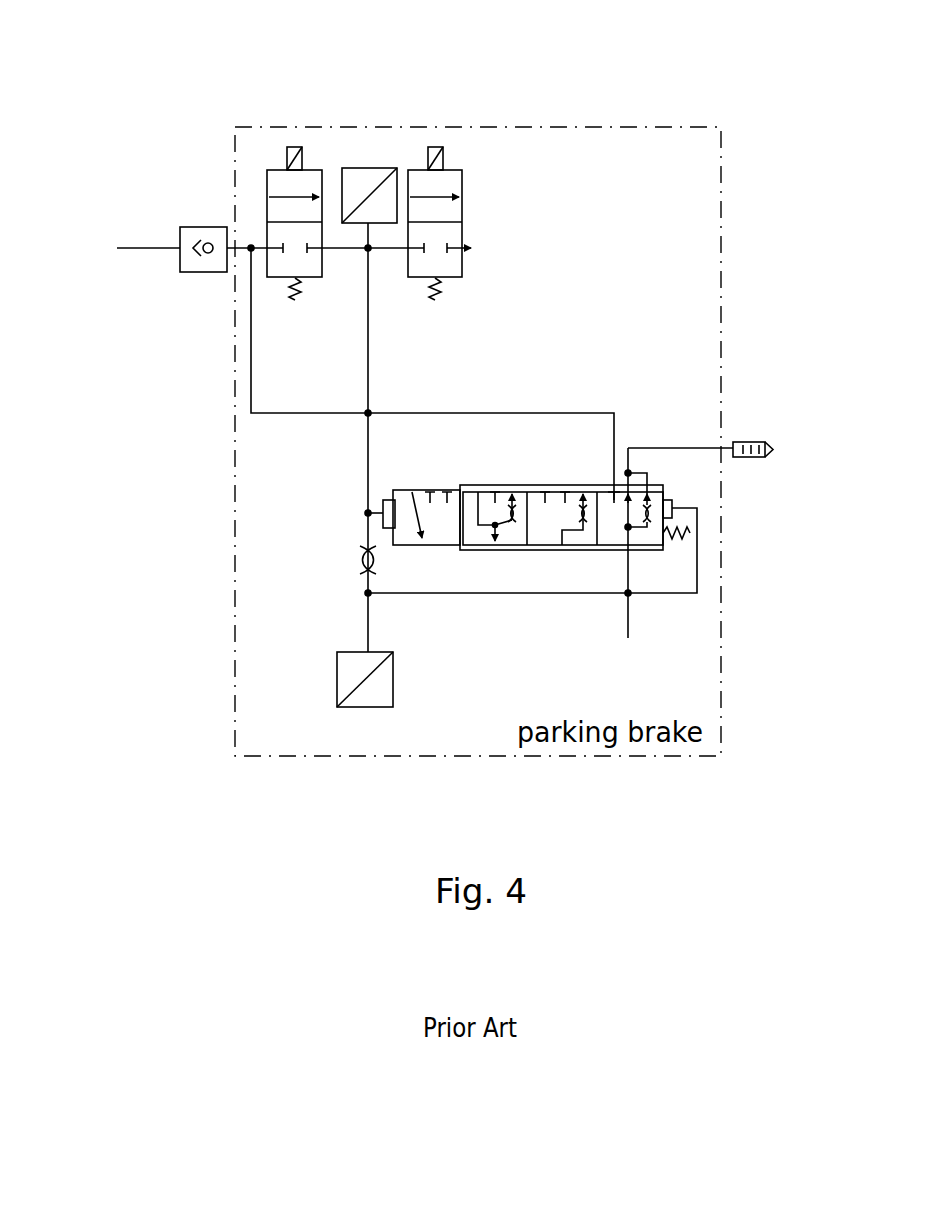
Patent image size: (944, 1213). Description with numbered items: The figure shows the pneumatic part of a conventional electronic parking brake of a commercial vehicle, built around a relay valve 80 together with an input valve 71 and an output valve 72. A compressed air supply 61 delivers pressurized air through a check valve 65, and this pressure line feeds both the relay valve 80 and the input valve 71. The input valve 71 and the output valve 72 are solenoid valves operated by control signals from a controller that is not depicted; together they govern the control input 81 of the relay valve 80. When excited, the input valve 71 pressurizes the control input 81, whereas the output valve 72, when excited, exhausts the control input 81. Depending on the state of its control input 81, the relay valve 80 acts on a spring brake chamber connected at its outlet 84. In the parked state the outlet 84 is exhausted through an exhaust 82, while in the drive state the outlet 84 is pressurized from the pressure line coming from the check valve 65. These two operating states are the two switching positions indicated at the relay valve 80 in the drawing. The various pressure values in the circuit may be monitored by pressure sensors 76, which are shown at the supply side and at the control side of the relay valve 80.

The compressed air supply 61 is at (143, 248).
The check valve 65 is at (203, 273).
The input valve 71 is at (267, 181).
The output valve 72 is at (462, 183).
The pressure sensors 76 is at (377, 168).
The relay valve 80 is at (664, 493).
The control input 81 is at (381, 505).
The exhaust 82 is at (753, 442).
The outlet 84 is at (630, 622).